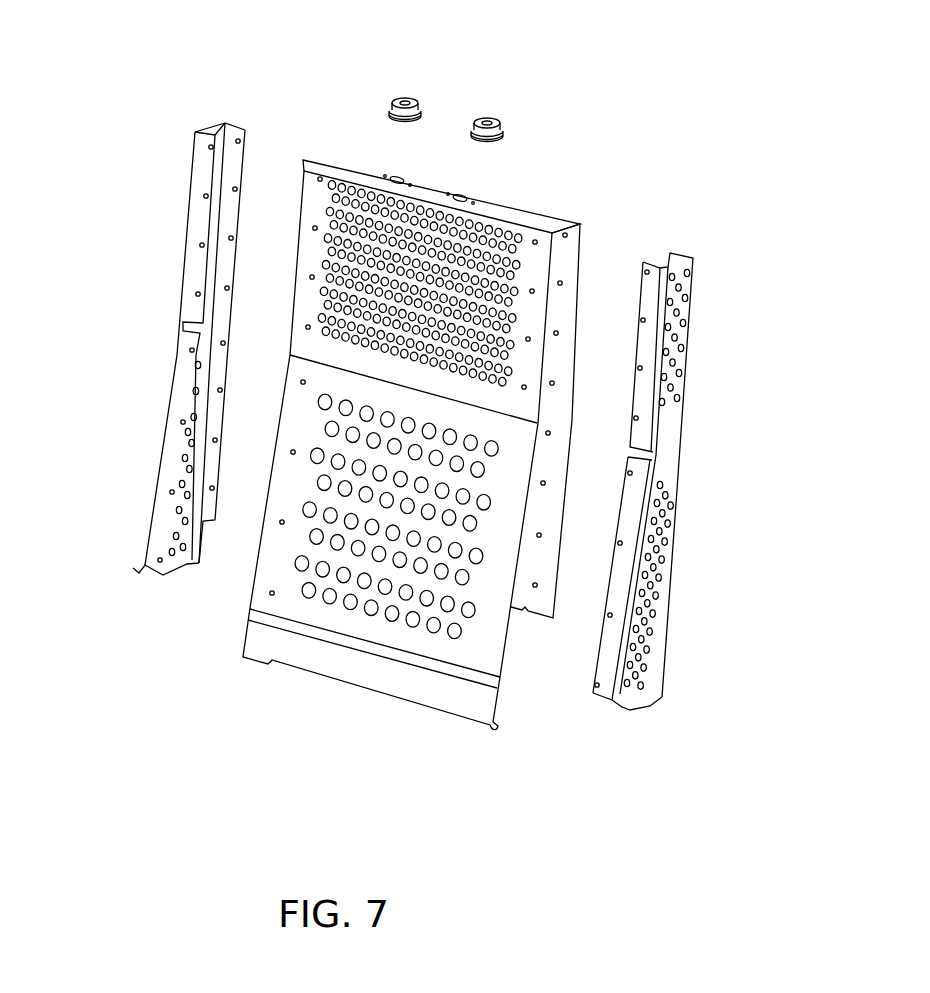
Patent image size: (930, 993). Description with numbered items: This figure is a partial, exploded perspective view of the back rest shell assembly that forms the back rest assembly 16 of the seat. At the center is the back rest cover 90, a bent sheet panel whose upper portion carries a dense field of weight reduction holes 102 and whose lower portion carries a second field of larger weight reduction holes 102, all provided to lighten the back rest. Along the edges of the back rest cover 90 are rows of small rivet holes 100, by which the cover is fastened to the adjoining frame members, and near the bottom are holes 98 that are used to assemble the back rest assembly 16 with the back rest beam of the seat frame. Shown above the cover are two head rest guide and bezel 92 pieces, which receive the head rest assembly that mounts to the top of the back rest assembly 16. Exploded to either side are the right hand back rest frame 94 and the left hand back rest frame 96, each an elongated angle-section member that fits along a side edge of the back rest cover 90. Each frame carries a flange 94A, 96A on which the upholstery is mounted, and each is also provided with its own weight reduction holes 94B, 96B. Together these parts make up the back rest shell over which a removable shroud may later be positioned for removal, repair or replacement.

The back rest assembly 16 is at (292, 268).
The back rest cover 90 is at (543, 222).
The head rest guide and bezel 92 is at (487, 120).
The right hand back rest frame 94 is at (177, 393).
The flange 94A is at (135, 566).
The weight reduction holes 94B is at (182, 468).
The left hand back rest frame 96 is at (668, 467).
The flange 96A is at (657, 707).
The weight reduction holes 96B is at (687, 315).
The holes 98 is at (495, 727).
The rivet holes 100 is at (543, 483).
The weight reduction holes 102 is at (388, 225).